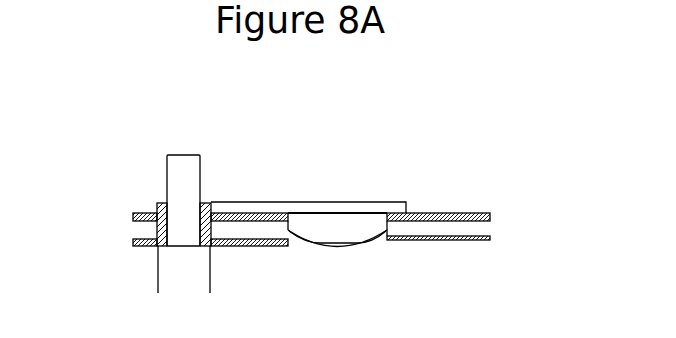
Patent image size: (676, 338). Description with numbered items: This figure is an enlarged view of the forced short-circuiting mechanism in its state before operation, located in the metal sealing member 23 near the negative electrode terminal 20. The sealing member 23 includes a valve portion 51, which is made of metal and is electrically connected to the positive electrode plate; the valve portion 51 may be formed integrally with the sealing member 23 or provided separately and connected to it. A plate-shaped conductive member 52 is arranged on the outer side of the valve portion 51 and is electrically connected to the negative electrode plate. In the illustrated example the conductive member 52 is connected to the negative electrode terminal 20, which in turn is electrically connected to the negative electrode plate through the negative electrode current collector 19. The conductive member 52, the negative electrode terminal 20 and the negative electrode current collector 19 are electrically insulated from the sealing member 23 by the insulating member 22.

The negative electrode current collector 19 is at (173, 265).
The negative electrode terminal 20 is at (182, 180).
The insulating member 22 is at (153, 207).
The sealing member 23 is at (482, 228).
The valve portion 51 is at (358, 245).
The conductive member 52 is at (310, 201).